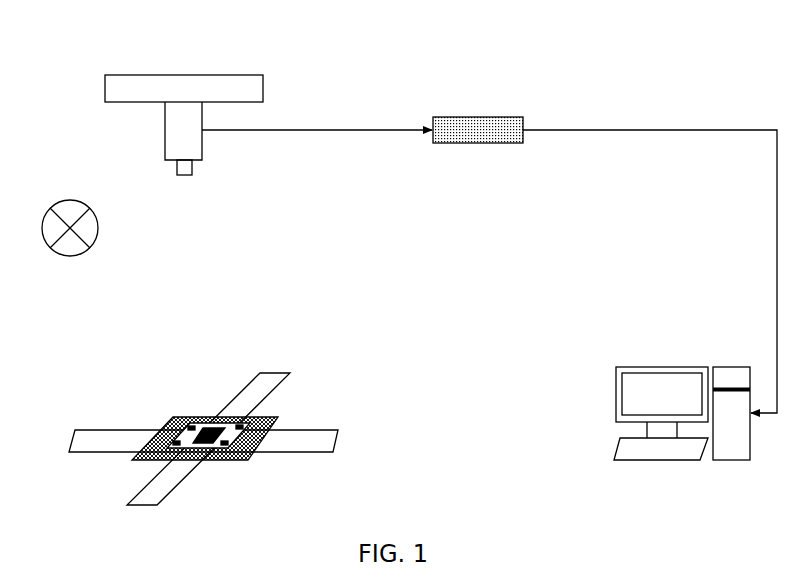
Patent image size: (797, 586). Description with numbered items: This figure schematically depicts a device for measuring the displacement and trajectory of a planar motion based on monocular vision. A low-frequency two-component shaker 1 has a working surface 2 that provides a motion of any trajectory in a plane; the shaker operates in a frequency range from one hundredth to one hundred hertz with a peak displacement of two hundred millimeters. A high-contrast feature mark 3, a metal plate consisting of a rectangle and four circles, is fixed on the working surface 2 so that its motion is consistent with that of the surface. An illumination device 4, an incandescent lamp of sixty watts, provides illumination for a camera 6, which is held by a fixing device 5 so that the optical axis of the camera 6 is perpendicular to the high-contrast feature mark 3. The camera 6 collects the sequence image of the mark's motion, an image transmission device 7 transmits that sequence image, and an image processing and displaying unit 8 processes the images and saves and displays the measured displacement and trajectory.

The low-frequency two-component shaker 1 is at (195, 463).
The working surface 2 is at (280, 420).
The high-contrast feature mark 3 is at (182, 433).
The illumination device 4 is at (70, 200).
The fixing device 5 is at (263, 83).
The camera 6 is at (202, 160).
The image transmission device 7 is at (472, 143).
The image processing and displaying unit 8 is at (617, 453).